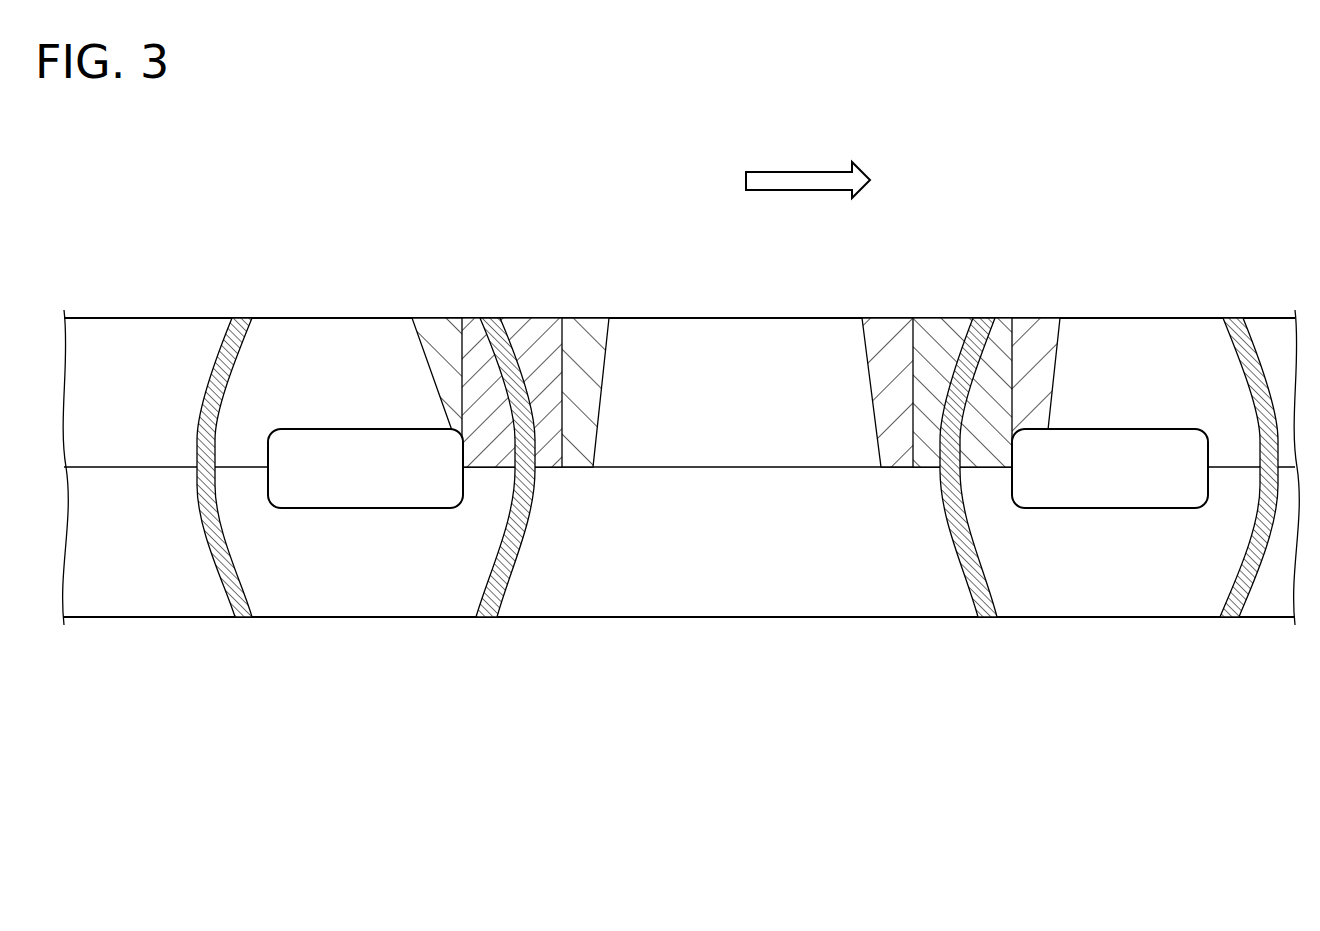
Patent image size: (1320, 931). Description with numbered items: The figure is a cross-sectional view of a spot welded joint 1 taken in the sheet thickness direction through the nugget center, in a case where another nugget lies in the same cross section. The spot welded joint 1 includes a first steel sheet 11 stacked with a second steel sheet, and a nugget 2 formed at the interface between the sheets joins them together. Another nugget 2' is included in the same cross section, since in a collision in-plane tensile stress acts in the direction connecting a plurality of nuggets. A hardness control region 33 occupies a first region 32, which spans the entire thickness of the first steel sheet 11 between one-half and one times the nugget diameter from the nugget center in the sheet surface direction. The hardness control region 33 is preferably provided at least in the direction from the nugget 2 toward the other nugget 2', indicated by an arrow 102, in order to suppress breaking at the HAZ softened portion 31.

The spot welded joint 1 is at (158, 262).
The first steel sheet 11 is at (208, 303).
The nugget 2 is at (365, 579).
The another nugget 2' is at (1110, 579).
The HAZ softened portion 31 is at (492, 330).
The first region 32 is at (548, 330).
The hardness control region 33 is at (736, 339).
The arrow 102 is at (788, 175).